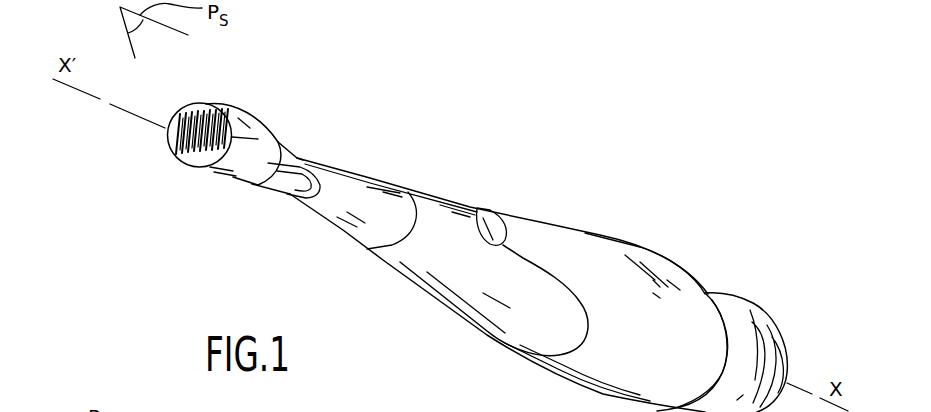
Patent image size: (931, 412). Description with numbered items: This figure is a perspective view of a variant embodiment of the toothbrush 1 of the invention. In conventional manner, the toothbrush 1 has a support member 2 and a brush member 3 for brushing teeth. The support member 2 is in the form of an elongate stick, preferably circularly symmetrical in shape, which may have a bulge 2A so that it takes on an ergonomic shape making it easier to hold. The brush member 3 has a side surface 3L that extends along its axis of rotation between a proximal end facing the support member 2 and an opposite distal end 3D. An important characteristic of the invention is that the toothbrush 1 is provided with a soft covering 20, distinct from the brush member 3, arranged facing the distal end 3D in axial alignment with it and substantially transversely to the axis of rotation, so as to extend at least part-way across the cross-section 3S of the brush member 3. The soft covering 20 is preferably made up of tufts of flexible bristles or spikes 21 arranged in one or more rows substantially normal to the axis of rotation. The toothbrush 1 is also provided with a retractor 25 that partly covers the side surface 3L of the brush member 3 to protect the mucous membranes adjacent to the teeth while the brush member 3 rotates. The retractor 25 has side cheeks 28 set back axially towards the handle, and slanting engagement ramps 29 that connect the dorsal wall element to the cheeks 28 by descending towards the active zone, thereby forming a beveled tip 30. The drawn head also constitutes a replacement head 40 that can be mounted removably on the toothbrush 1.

The toothbrush 1 is at (563, 168).
The support member 2 is at (607, 233).
The bulge 2A is at (668, 271).
The brush member 3 is at (229, 187).
The distal end 3D is at (205, 165).
The side surface 3L is at (261, 186).
The cross-section 3S is at (284, 130).
The soft covering 20 is at (208, 107).
The tufts of flexible bristles or spikes 21 is at (195, 112).
The retractor 25 is at (285, 134).
The side cheeks 28 is at (235, 112).
The engagement ramps 29 is at (213, 110).
The beveled tip 30 is at (162, 108).
The replacement head 40 is at (371, 165).